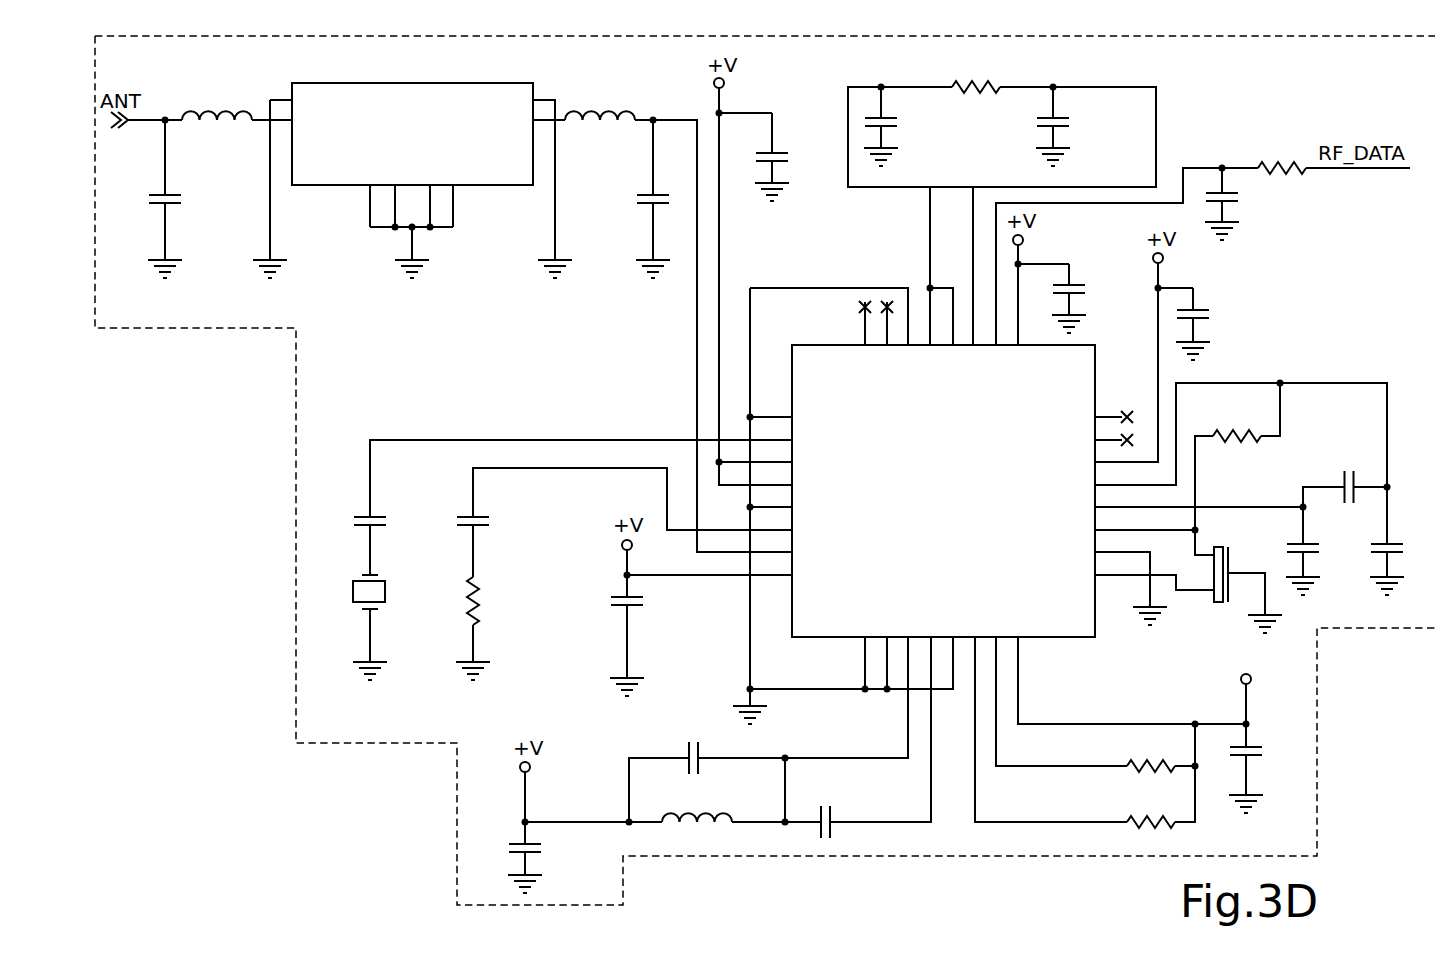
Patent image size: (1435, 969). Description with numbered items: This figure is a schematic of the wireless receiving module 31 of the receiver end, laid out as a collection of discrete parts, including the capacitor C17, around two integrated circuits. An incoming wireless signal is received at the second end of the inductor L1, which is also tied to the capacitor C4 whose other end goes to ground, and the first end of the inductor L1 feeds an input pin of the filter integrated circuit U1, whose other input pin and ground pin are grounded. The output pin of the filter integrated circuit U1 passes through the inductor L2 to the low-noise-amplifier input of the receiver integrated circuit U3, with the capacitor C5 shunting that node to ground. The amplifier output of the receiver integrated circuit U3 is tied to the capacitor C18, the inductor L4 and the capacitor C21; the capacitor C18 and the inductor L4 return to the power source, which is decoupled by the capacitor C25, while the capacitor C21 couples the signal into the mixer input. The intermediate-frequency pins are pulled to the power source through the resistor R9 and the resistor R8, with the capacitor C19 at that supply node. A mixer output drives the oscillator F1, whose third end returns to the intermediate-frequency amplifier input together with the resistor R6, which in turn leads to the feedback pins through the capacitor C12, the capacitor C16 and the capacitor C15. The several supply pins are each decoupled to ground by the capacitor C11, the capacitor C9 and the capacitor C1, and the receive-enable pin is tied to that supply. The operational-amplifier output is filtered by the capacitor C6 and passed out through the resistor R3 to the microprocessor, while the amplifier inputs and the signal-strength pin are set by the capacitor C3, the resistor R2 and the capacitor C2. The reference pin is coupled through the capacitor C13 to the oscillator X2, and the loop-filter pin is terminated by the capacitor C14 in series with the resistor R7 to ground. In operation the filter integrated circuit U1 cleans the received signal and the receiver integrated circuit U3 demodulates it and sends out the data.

The wireless receiving module 31 is at (296, 578).
The filter integrated circuit U1 is at (412, 168).
The receiver integrated circuit U3 is at (943, 478).
The inductor L1 is at (217, 105).
The inductor L2 is at (600, 104).
The inductor L4 is at (697, 805).
The capacitor C1 is at (788, 157).
The capacitor C2 is at (898, 126).
The capacitor C3 is at (1070, 126).
The capacitor C4 is at (180, 199).
The capacitor C5 is at (664, 199).
The capacitor C6 is at (1239, 204).
The capacitor C9 is at (1085, 298).
The capacitor C11 is at (1215, 324).
The capacitor C12 is at (1349, 474).
The capacitor C13 is at (392, 542).
The capacitor C14 is at (496, 543).
The capacitor C15 is at (1319, 556).
The capacitor C16 is at (1400, 556).
The capacitor C17 is at (652, 642).
The capacitor C18 is at (691, 751).
The capacitor C19 is at (1265, 767).
The capacitor C21 is at (827, 810).
The capacitor C25 is at (546, 865).
The resistor R2 is at (1002, 123).
The resistor R3 is at (1282, 157).
The resistor R6 is at (1237, 424).
The resistor R7 is at (486, 628).
The resistor R8 is at (1151, 778).
The resistor R9 is at (1151, 834).
The oscillator X2 is at (385, 621).
The oscillator F1 is at (1248, 588).